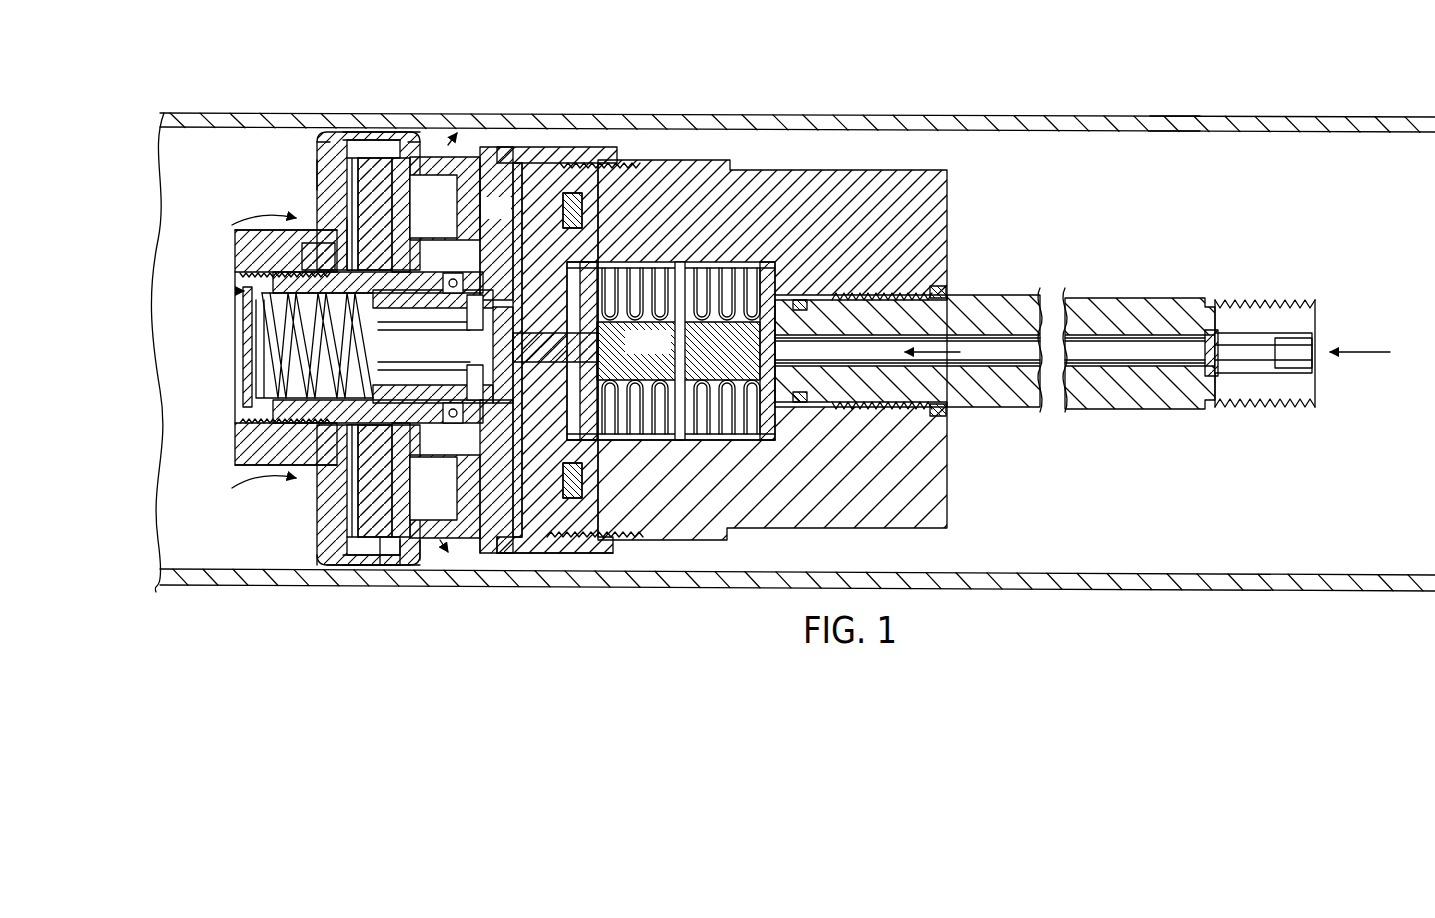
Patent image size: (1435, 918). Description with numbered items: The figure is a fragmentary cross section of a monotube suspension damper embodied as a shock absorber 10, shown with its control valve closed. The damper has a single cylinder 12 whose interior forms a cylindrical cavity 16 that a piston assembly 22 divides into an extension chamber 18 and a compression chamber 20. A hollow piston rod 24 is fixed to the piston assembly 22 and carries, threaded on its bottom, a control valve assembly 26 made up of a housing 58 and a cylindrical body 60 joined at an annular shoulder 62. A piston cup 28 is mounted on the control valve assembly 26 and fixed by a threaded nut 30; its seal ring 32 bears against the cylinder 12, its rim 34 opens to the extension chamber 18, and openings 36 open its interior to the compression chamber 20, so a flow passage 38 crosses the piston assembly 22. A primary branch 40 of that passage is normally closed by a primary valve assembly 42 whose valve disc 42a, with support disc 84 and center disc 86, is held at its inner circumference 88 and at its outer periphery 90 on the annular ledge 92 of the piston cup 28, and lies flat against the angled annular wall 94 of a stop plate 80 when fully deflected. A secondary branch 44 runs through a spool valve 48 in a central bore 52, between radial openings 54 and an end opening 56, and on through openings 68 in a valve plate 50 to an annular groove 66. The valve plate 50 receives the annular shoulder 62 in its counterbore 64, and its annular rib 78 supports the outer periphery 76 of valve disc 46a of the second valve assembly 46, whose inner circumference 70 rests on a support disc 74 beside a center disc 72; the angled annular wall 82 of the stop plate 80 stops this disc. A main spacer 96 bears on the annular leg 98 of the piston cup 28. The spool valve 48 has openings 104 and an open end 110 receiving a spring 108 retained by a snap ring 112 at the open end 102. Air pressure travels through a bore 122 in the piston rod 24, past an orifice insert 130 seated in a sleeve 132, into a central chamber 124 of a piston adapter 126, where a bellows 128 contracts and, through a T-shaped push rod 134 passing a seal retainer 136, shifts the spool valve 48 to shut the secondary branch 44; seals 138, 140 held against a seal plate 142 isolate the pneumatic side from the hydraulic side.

The shock absorber 10 is at (664, 16).
The cylinder 12 is at (775, 117).
The cylindrical cavity 16 is at (1165, 145).
The extension chamber 18 is at (1242, 522).
The compression chamber 20 is at (198, 559).
The piston assembly 22 is at (310, 562).
The piston rod 24 is at (1130, 300).
The control valve assembly 26 is at (548, 140).
The piston cup 28 is at (320, 150).
The threaded nut 30 is at (235, 250).
The seal ring 32 is at (405, 563).
The rim 34 is at (425, 560).
The openings 36 is at (320, 500).
The flow passage 38 is at (385, 565).
The primary branch 40 is at (455, 140).
The primary valve assembly 42 is at (335, 562).
The valve disc 42a is at (335, 132).
The secondary branch 44 is at (433, 370).
The second valve assembly 46 is at (365, 563).
The valve disc 46a is at (400, 132).
The spool valve 48 is at (405, 358).
The valve plate 50 is at (495, 160).
The central bore 52 is at (260, 330).
The openings 54 is at (465, 415).
The opening 56 is at (280, 435).
The housing 58 is at (597, 148).
The cylindrical body 60 is at (238, 283).
The annular shoulder 62 is at (480, 450).
The counterbore 64 is at (492, 553).
The annular groove 66 is at (480, 190).
The openings 68 is at (470, 495).
The inner circumference 70 is at (433, 346).
The center disc 72 is at (512, 255).
The support disc 74 is at (374, 165).
The outer periphery 76 is at (405, 200).
The annular rib 78 is at (445, 198).
The stop plate 80 is at (362, 132).
The angled annular wall 82 is at (470, 553).
The support disc 84 is at (352, 170).
The center disc 86 is at (350, 235).
The inner circumference 88 is at (318, 240).
The outer periphery 90 is at (322, 175).
The annular ledge 92 is at (345, 552).
The angled annular wall 94 is at (360, 510).
The main spacer 96 is at (300, 470).
The annular leg 98 is at (255, 232).
The open end 102 is at (236, 375).
The openings 104 is at (568, 262).
The spring 108 is at (310, 415).
The end 110 is at (300, 470).
The snap ring 112 is at (247, 340).
The bore 122 is at (986, 350).
The central chamber 124 is at (668, 262).
The piston adapter 126 is at (846, 170).
The bellows 128 is at (742, 262).
The orifice insert 130 is at (1238, 340).
The sleeve 132 is at (1300, 336).
The push rod 134 is at (586, 440).
The seal retainer 136 is at (495, 208).
The seal 138 is at (608, 340).
The seal 140 is at (583, 498).
The seal plate 142 is at (538, 530).